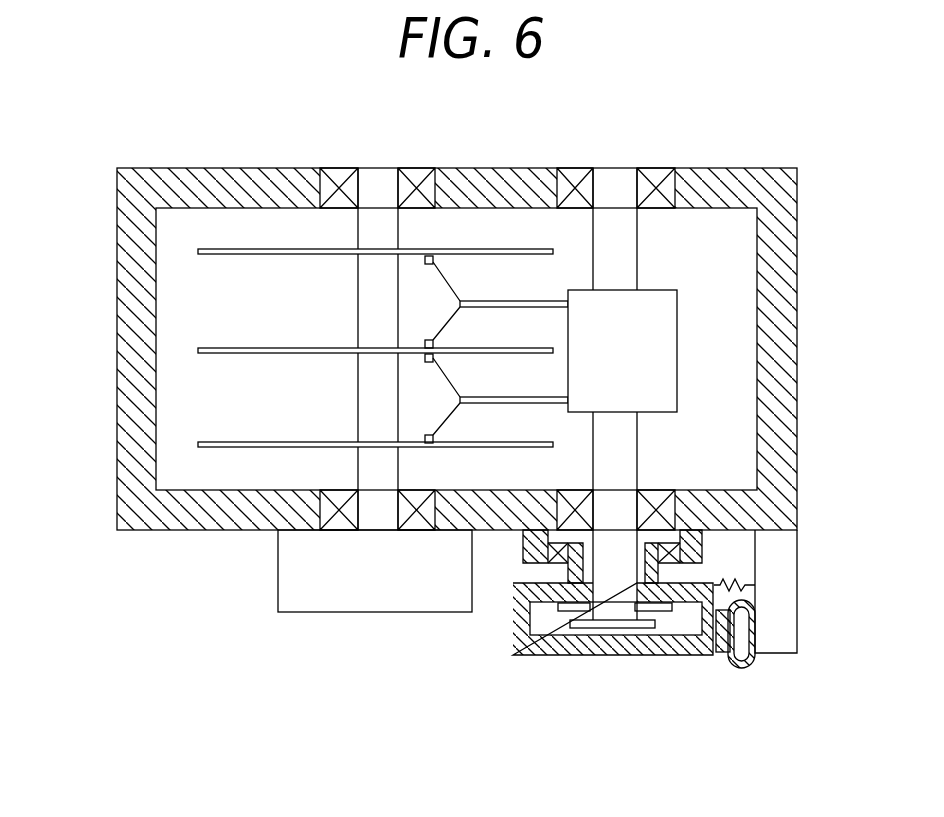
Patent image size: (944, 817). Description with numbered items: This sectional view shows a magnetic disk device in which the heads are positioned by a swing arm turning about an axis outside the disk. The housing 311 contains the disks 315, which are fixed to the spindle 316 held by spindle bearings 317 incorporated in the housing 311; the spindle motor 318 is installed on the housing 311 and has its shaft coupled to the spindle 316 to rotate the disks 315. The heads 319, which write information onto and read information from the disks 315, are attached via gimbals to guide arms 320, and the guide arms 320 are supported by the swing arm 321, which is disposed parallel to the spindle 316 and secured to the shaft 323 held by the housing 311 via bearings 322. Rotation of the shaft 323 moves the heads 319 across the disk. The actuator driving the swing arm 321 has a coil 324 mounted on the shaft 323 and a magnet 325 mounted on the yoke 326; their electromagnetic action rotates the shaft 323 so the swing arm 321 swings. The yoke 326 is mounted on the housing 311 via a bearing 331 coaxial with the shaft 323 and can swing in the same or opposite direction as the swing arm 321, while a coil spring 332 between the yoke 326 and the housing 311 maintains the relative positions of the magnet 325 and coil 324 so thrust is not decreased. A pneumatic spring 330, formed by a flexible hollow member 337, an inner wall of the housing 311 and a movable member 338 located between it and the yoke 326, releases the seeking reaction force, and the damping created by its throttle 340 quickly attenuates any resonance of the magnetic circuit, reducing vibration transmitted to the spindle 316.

The housing 311 is at (118, 216).
The disks 315 is at (205, 249).
The spindle 316 is at (378, 186).
The spindle bearings 317 is at (340, 177).
The spindle motor 318 is at (287, 584).
The heads 319 is at (433, 256).
The guide arms 320 is at (520, 300).
The swing arm 321 is at (660, 311).
The bearings 322 is at (678, 183).
The shaft 323 is at (617, 176).
The coil 324 is at (565, 655).
The magnet 325 is at (558, 611).
The yoke 326 is at (620, 655).
The pneumatic spring 330 is at (797, 655).
The bearing 331 is at (683, 536).
The coil spring 332 is at (740, 583).
The flexible hollow member 337 is at (753, 641).
The movable member 338 is at (721, 655).
The throttle 340 is at (753, 612).